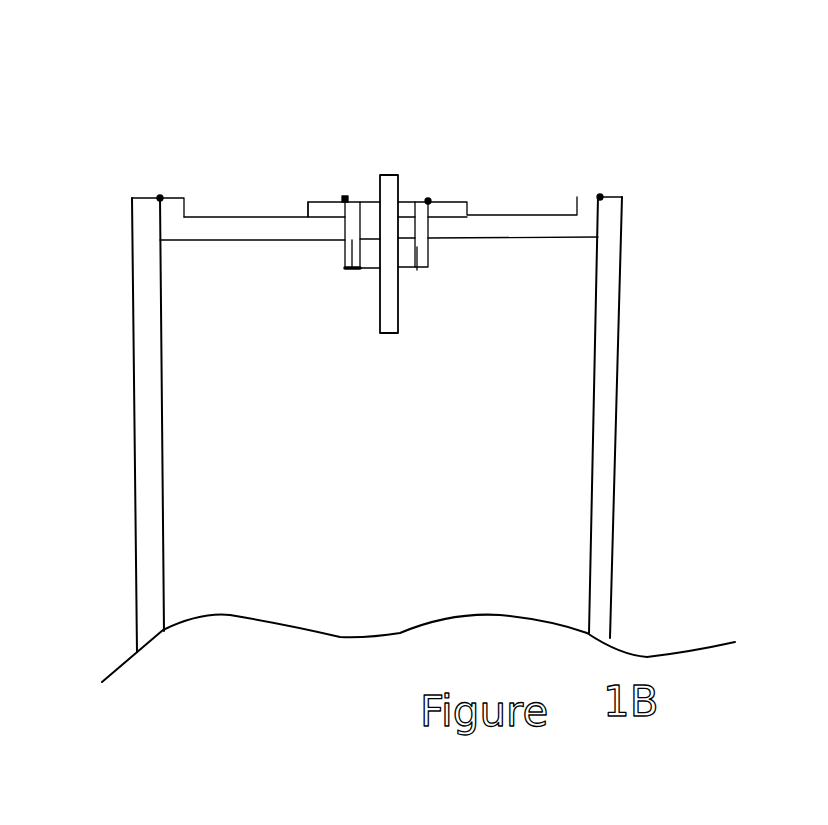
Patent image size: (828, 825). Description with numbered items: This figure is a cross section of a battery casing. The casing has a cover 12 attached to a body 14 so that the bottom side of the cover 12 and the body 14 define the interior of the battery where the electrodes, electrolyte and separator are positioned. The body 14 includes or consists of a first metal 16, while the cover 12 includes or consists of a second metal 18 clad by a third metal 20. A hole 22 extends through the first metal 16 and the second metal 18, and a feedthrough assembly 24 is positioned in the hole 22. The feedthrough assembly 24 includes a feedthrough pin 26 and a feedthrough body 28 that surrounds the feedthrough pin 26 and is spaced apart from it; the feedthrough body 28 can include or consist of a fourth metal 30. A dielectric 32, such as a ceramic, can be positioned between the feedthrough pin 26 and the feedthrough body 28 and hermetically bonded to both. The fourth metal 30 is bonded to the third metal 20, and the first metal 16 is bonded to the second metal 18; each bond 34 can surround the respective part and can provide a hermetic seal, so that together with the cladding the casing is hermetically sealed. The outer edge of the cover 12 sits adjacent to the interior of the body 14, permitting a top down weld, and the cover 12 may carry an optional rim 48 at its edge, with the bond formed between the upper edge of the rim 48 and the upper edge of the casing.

The cover 12 is at (524, 180).
The body 14 is at (133, 362).
The first metal 16 is at (145, 257).
The second metal 18 is at (233, 232).
The third metal 20 is at (320, 210).
The hole 22 is at (346, 228).
The feedthrough assembly 24 is at (438, 254).
The feedthrough pin 26 is at (384, 178).
The feedthrough body 28 is at (352, 278).
The fourth metal 30 is at (422, 253).
The dielectric 32 is at (409, 217).
The bond 34 is at (160, 196).
The rim 48 is at (183, 212).